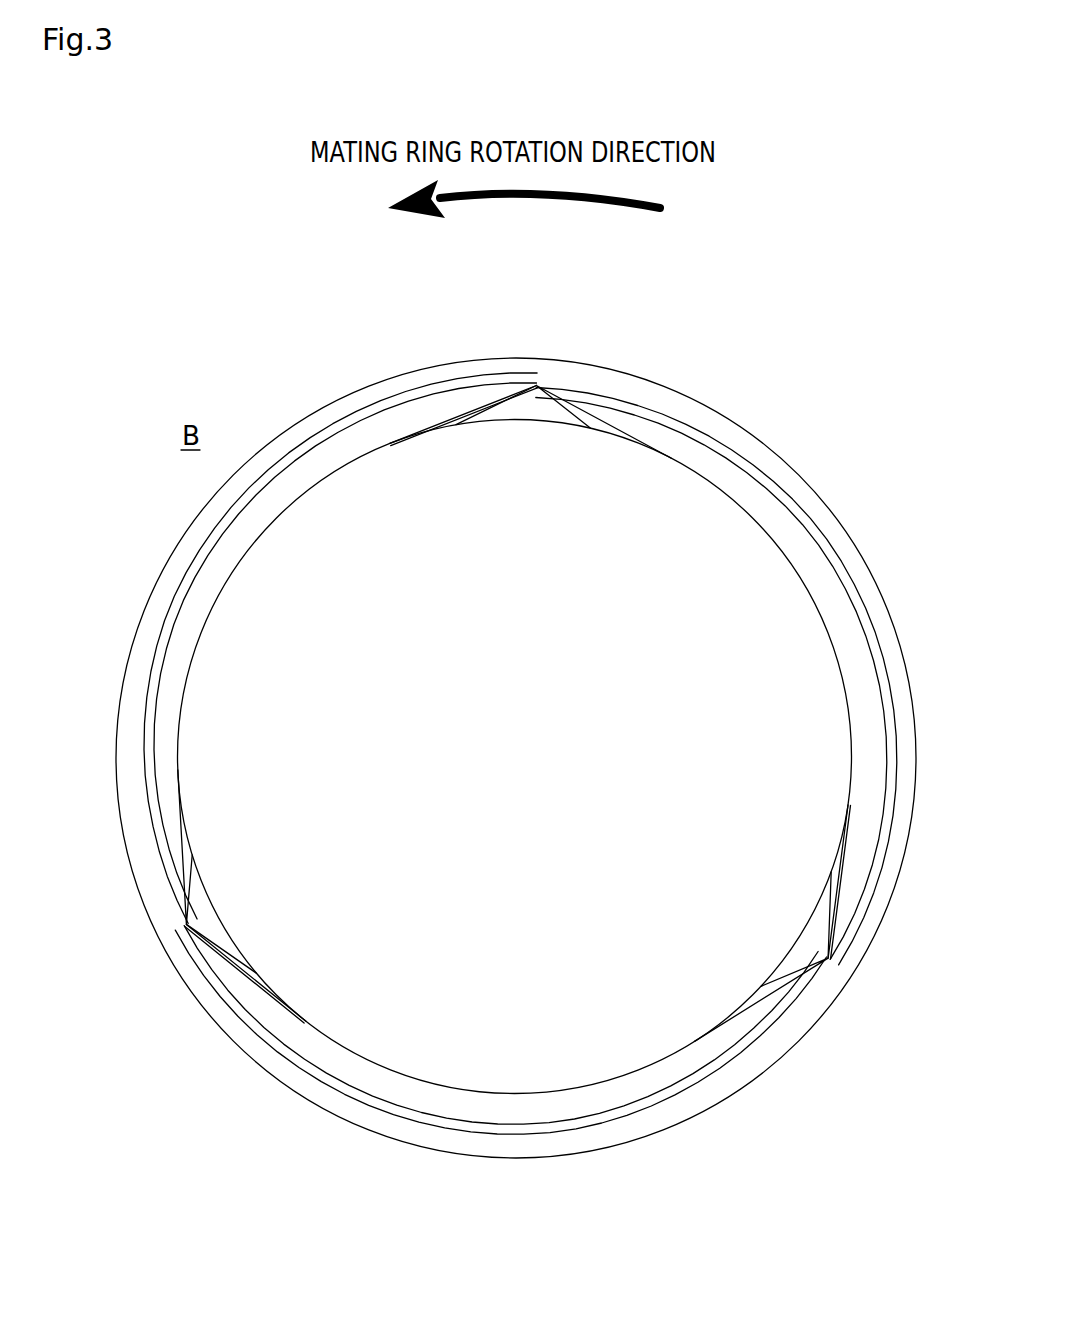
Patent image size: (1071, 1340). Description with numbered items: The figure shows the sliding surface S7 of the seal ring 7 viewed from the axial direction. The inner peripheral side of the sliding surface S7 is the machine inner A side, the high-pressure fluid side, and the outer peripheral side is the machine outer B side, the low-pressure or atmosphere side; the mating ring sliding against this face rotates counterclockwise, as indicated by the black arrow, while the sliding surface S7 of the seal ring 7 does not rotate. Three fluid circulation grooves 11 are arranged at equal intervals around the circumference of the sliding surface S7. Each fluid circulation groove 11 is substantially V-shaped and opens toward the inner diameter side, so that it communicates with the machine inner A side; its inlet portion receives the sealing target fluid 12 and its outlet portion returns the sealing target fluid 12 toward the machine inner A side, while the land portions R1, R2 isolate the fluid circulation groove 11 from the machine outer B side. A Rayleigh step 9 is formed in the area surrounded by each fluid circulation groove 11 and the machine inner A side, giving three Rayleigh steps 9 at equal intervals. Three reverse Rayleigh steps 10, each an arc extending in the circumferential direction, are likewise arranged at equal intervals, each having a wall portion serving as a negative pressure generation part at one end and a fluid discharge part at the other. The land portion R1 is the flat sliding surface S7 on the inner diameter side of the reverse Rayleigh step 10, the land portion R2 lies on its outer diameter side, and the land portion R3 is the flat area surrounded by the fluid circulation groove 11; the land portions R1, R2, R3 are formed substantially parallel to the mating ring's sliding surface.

The seal ring 7 is at (742, 414).
The Rayleigh step 9 is at (527, 398).
The reverse Rayleigh step 10 is at (795, 508).
The fluid circulation groove 11 is at (548, 385).
The sealing target fluid 12 is at (508, 765).
The land portion R1 is at (243, 568).
The land portion R2 is at (320, 420).
The land portion R3 is at (522, 408).
The sliding surface S7 is at (835, 522).